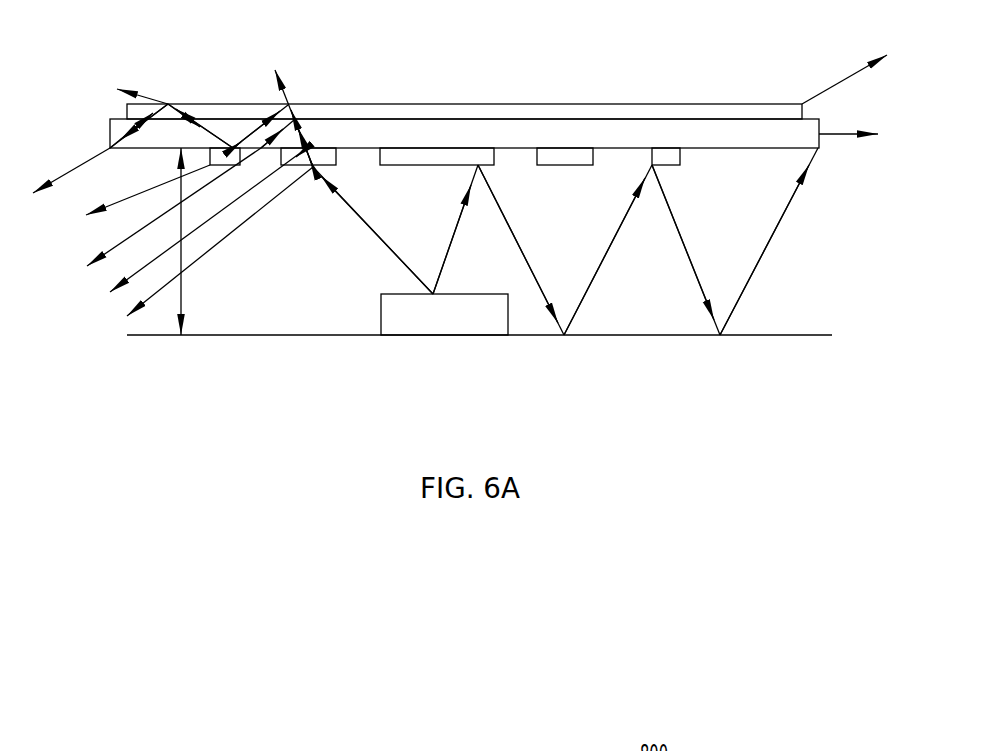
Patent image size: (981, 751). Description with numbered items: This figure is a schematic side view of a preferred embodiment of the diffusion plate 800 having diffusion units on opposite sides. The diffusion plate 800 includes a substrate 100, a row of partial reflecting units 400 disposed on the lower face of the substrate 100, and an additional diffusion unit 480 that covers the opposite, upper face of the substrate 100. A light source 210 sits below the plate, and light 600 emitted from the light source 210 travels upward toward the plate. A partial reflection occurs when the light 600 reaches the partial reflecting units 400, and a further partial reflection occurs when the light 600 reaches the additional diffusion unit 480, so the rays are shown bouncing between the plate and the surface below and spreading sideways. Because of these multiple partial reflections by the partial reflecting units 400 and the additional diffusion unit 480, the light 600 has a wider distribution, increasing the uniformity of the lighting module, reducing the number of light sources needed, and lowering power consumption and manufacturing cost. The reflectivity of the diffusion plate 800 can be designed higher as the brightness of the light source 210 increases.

The substrate 100 is at (750, 137).
The additional diffusion unit 480 is at (562, 112).
The partial reflecting units 400 is at (467, 113).
The diffusion plate 800 is at (464, 93).
The light 600 is at (457, 228).
The light source 210 is at (450, 323).